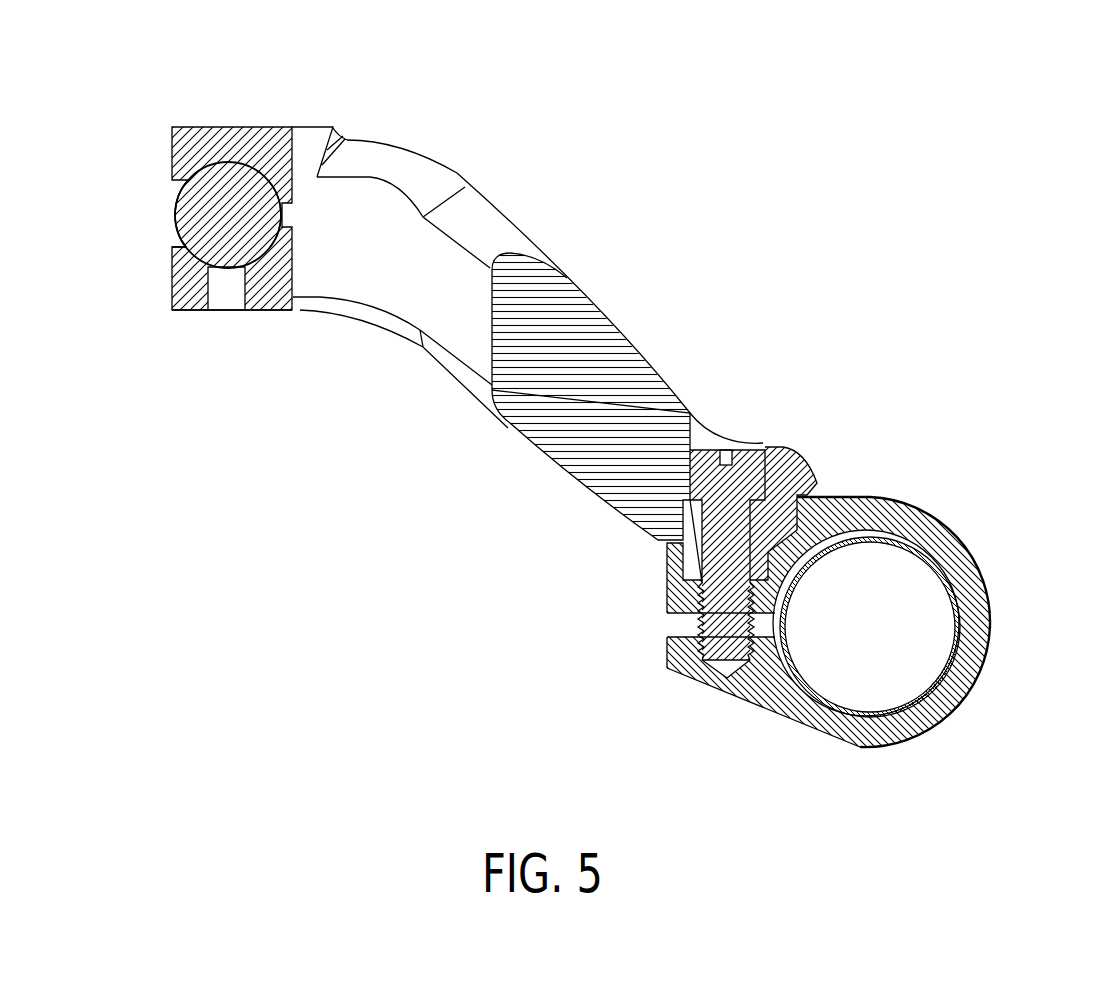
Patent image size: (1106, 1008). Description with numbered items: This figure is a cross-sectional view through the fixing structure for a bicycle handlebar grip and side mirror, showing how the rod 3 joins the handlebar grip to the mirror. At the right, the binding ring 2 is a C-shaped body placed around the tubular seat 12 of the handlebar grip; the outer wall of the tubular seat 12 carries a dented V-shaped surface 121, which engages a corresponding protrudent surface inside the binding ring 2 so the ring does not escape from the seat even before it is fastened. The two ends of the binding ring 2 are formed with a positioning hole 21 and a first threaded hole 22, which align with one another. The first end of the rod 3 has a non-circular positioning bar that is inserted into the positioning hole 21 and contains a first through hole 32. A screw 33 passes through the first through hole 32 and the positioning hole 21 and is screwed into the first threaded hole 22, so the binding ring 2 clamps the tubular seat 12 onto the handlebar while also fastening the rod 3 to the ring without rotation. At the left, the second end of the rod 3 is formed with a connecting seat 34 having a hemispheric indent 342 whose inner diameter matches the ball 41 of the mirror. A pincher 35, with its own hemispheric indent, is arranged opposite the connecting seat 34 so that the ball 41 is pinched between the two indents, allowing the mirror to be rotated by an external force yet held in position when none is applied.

The binding ring 2 is at (923, 509).
The rod 3 is at (618, 318).
The tubular seat 12 is at (957, 622).
The dented V-shaped surface 121 is at (940, 683).
The positioning hole 21 is at (667, 560).
The first threaded hole 22 is at (722, 663).
The first through hole 32 is at (710, 440).
The screw 33 is at (752, 452).
The connecting seat 34 is at (256, 145).
The pincher 35 is at (188, 288).
The ball 41 is at (212, 222).
The hemispheric indent 342 is at (220, 183).